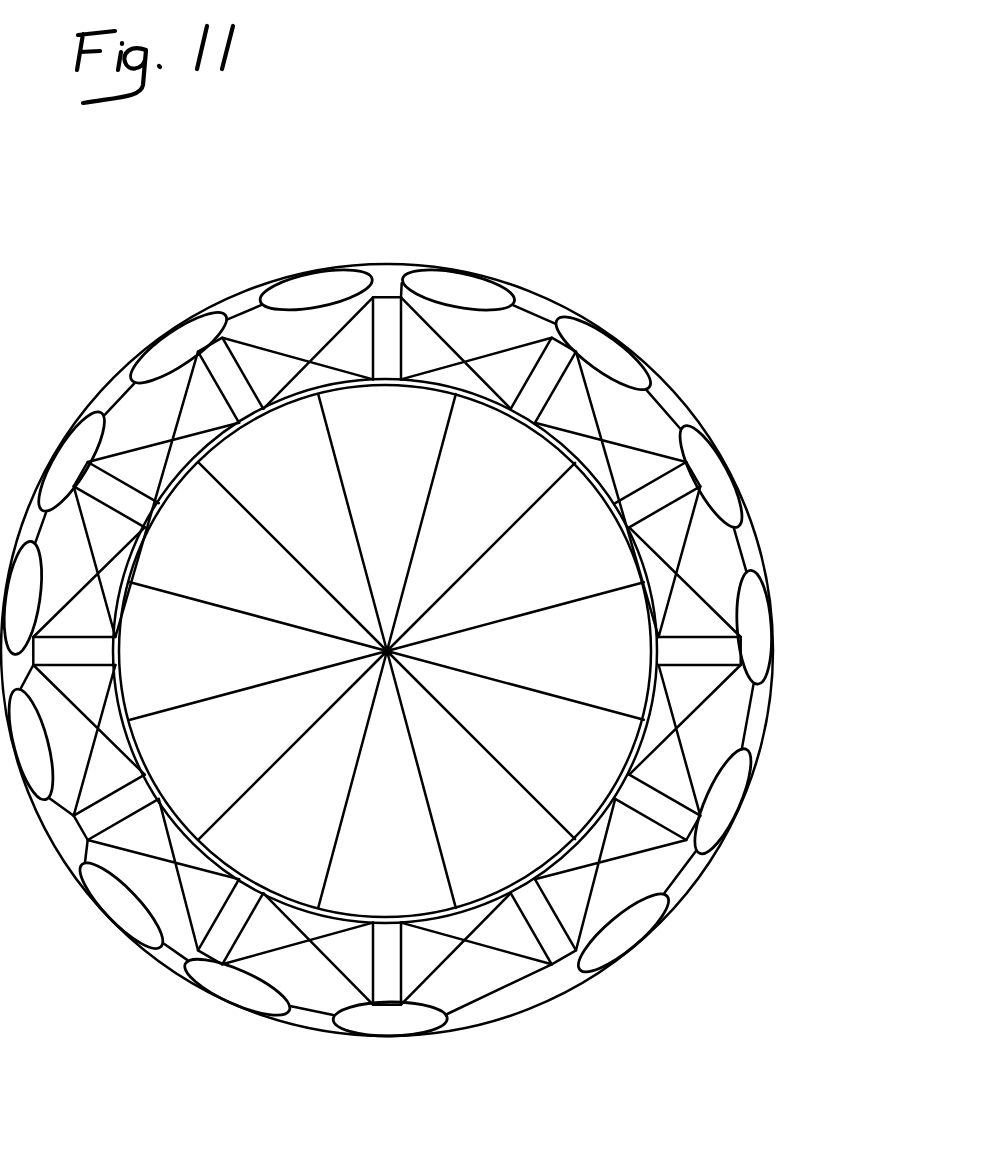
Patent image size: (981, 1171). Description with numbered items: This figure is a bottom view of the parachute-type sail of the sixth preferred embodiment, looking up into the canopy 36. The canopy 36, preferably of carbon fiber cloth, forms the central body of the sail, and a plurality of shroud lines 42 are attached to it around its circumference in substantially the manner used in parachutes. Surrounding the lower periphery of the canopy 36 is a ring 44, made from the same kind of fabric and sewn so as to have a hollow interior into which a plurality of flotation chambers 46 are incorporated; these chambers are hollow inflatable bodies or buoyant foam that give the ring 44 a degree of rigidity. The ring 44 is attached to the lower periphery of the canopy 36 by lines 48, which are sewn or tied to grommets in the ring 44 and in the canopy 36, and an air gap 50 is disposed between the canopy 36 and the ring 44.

The canopy 36 is at (120, 634).
The shroud lines 42 is at (423, 527).
The ring 44 is at (668, 412).
The flotation chambers 46 is at (490, 290).
The lines 48 is at (657, 882).
The air gap 50 is at (713, 580).